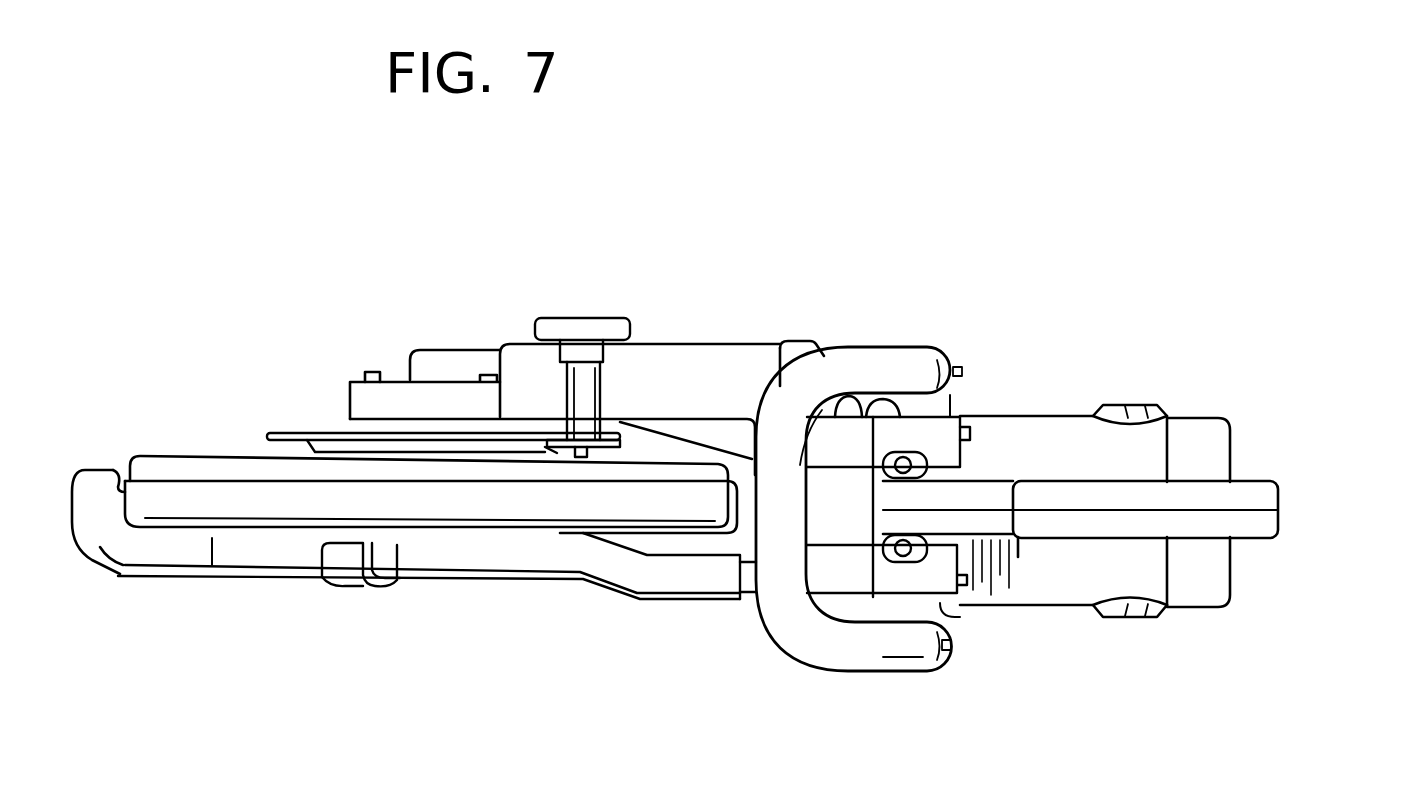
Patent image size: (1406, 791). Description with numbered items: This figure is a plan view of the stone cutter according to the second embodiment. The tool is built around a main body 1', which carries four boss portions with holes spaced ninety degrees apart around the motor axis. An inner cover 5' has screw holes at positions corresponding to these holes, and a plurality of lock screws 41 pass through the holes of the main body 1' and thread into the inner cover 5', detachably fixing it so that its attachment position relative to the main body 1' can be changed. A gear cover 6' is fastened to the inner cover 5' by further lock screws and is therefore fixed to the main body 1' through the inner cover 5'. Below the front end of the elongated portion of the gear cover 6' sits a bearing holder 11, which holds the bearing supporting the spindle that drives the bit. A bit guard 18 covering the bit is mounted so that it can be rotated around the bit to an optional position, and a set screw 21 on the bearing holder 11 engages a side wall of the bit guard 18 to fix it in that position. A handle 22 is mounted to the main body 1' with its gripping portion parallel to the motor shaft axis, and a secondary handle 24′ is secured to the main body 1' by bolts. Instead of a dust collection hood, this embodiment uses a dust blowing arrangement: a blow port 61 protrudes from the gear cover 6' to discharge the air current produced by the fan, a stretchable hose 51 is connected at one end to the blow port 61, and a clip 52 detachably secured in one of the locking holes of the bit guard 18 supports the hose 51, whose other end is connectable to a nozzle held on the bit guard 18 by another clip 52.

The main body 1' is at (1085, 459).
The inner cover 5' is at (840, 323).
The gear cover 6' is at (565, 352).
The bearing holder 11 is at (360, 427).
The bit guard 18 is at (182, 467).
The set screw 21 is at (576, 318).
The handle 22 is at (1287, 488).
The secondary handle 24′ is at (840, 658).
The lock screws 41 is at (980, 423).
The hose 51 is at (120, 568).
The clip 52 is at (353, 586).
The blow port 61 is at (740, 600).